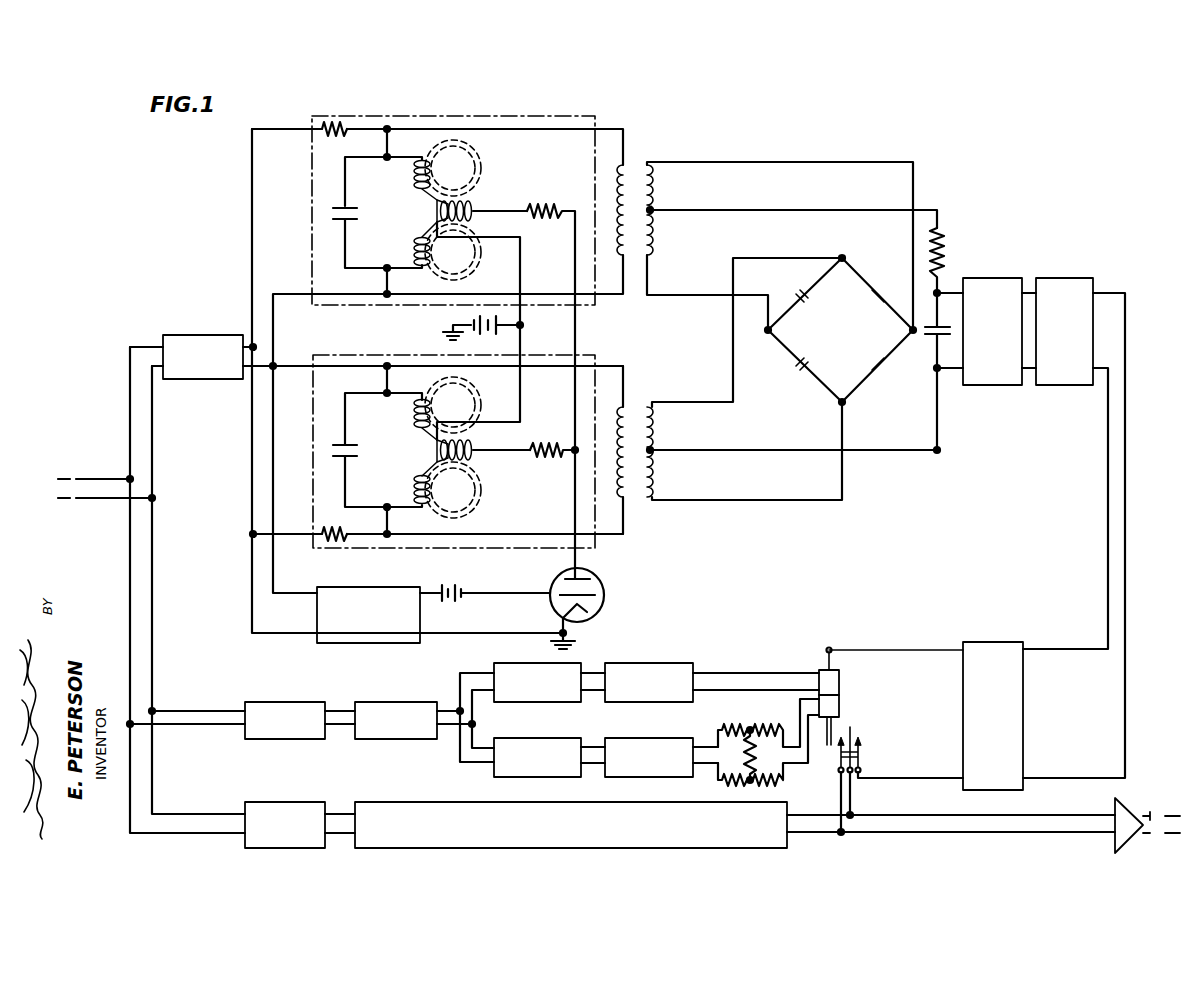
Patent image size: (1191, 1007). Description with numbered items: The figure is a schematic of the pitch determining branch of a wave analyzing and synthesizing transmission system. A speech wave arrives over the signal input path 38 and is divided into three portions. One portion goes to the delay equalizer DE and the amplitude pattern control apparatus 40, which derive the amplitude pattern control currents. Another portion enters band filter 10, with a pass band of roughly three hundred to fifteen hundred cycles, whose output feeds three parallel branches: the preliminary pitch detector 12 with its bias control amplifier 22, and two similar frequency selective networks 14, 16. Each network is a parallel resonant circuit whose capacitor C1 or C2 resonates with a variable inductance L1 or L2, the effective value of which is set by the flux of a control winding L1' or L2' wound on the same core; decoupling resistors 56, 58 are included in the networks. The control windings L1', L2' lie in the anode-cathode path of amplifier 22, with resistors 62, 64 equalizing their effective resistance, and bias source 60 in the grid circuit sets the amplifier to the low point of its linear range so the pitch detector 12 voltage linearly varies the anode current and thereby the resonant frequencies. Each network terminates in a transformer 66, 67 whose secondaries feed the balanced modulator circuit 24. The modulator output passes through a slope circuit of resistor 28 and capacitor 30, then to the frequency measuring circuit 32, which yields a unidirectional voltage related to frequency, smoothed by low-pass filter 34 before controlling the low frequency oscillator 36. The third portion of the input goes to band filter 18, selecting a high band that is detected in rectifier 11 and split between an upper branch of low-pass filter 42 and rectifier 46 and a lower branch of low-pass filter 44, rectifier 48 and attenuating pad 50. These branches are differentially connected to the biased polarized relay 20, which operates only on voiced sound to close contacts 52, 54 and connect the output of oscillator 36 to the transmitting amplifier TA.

The band filter 10 is at (218, 334).
The rectifier 11 is at (402, 702).
The preliminary pitch detector 12 is at (398, 588).
The frequency selective network 14 is at (550, 116).
The frequency selective network 16 is at (550, 354).
The band filter 18 is at (300, 702).
The biased polarized relay 20 is at (840, 682).
The bias control amplifier 22 is at (604, 582).
The balanced modulator circuit 24 is at (861, 286).
The resistor 28 is at (942, 256).
The capacitor 30 is at (933, 339).
The frequency measuring circuit 32 is at (995, 278).
The low-pass filter 34 is at (1066, 278).
The low frequency oscillator 36 is at (987, 642).
The signal input path 38 is at (110, 478).
The amplitude pattern control apparatus 40 is at (430, 802).
The low-pass filter 42 is at (527, 663).
The low-pass filter 44 is at (567, 738).
The rectifier 46 is at (644, 663).
The rectifier 48 is at (676, 738).
The attenuating pad 50 is at (751, 728).
The relay contact 52 is at (856, 736).
The relay contact 54 is at (838, 746).
The decoupling resistor 56 is at (340, 134).
The decoupling resistor 58 is at (340, 532).
The bias source 60 is at (453, 586).
The resistor 62 is at (539, 201).
The resistor 64 is at (539, 445).
The transformer 66 is at (638, 170).
The transformer 67 is at (638, 409).
The capacitor C1 is at (334, 214).
The capacitor C2 is at (334, 450).
The resonating inductance L1 is at (437, 210).
The control winding L1' is at (482, 253).
The resonating inductance L2 is at (437, 447).
The control winding L2' is at (483, 393).
The delay equalizer DE is at (314, 802).
The transmitting amplifier TA is at (1147, 818).